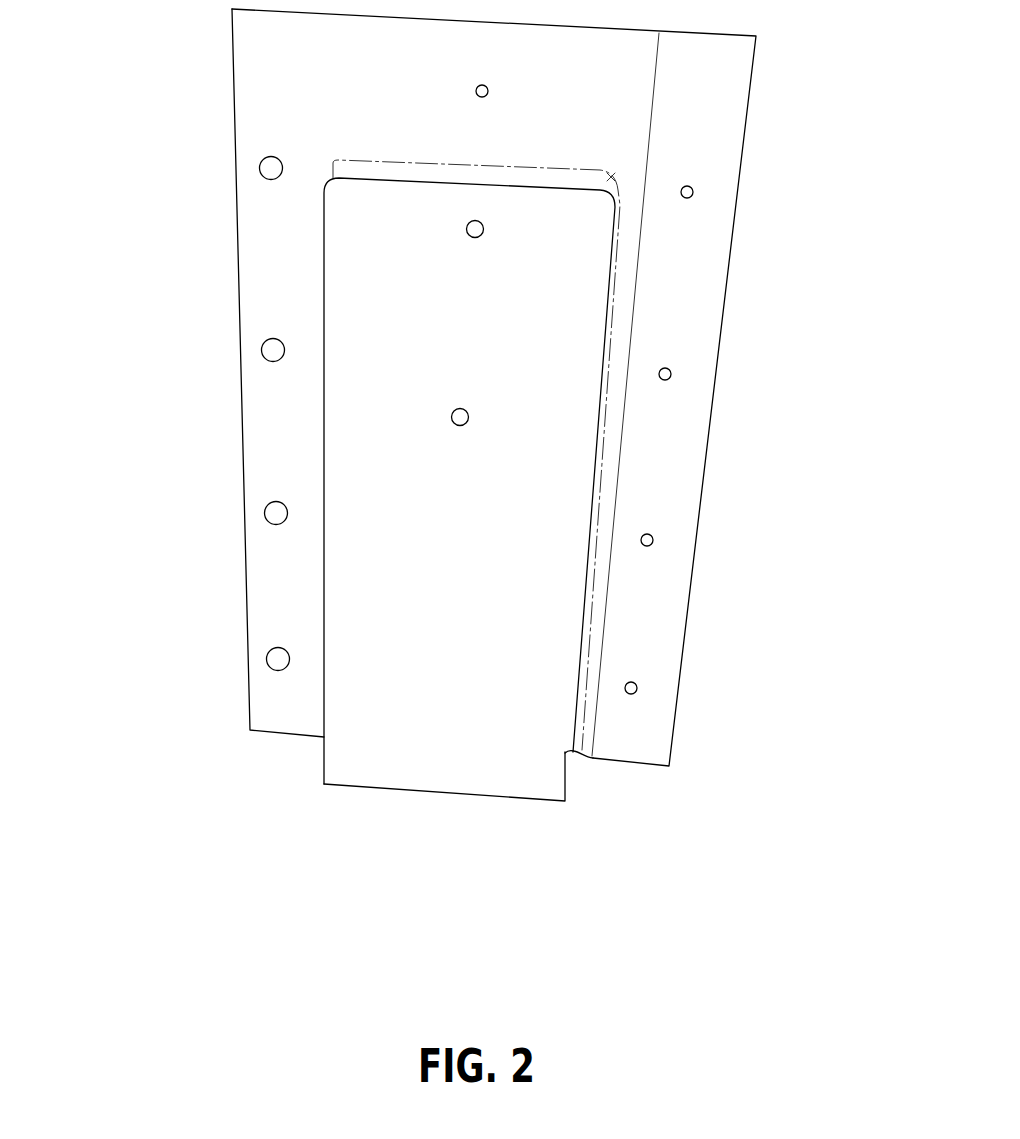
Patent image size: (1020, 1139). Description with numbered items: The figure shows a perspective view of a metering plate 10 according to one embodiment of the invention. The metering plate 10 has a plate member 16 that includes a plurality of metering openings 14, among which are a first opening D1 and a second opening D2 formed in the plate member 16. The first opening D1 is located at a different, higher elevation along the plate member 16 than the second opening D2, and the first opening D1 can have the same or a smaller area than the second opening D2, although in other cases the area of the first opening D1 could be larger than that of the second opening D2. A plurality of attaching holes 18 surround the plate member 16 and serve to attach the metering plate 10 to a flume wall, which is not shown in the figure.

The metering plate 10 is at (196, 386).
The metering openings 14 is at (452, 410).
The plate member 16 is at (431, 750).
The attaching holes 18 is at (266, 657).
The first opening D1 is at (482, 222).
The second opening D2 is at (468, 420).